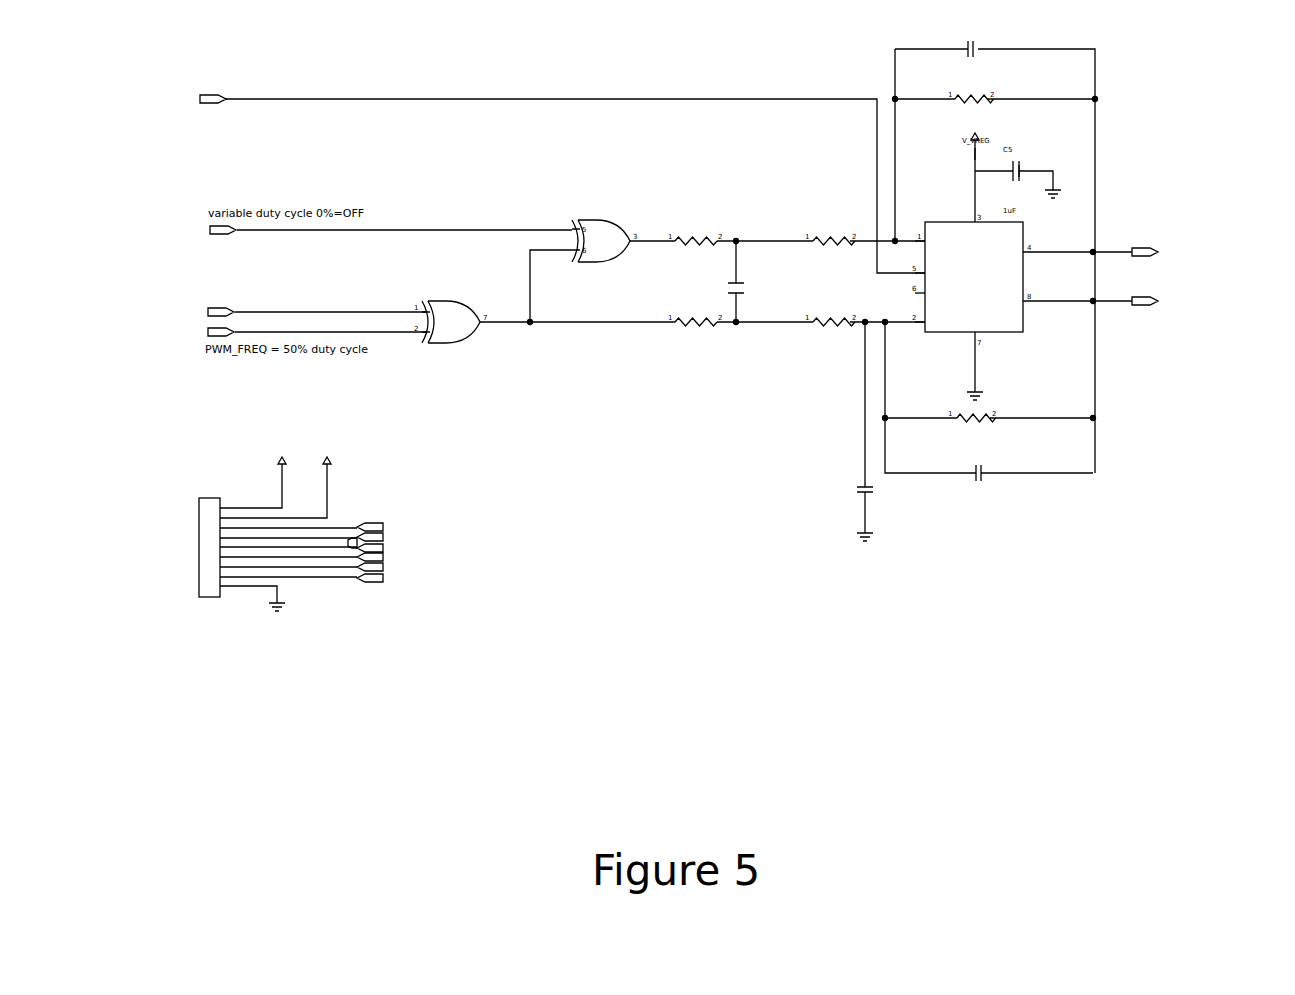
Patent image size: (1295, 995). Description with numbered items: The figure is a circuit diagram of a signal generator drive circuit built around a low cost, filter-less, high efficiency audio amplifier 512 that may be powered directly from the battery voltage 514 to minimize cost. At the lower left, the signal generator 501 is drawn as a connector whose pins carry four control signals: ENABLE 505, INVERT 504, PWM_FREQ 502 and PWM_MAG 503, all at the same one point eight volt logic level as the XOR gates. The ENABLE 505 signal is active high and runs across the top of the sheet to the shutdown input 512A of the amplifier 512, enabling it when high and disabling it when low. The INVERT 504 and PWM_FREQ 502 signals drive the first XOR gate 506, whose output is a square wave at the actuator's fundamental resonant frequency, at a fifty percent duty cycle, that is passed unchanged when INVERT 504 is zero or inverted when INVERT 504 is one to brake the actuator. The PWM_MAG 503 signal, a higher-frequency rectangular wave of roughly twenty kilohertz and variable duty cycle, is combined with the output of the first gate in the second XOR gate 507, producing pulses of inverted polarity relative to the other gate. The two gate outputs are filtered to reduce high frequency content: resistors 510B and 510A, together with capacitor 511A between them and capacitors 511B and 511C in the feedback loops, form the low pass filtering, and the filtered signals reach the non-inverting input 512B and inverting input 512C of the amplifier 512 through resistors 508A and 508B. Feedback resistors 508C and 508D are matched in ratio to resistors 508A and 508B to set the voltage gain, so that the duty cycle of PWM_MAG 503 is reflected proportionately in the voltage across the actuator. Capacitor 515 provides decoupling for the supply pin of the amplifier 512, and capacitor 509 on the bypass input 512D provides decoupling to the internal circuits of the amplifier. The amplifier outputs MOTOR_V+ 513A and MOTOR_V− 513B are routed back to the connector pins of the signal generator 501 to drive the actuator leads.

The signal generator 501 is at (190, 522).
The PWM_FREQ signal 502 is at (151, 335).
The PWM_MAG signal 503 is at (155, 222).
The INVERT signal 504 is at (163, 310).
The ENABLE signal 505 is at (167, 88).
The XOR gate 506 is at (451, 352).
The XOR gate 507 is at (600, 218).
The resistor 508A is at (816, 233).
The resistor 508B is at (816, 338).
The resistor 508C is at (985, 103).
The resistor 508D is at (988, 414).
The capacitor 509 is at (862, 486).
The resistor 510A is at (685, 332).
The resistor 510B is at (674, 228).
The capacitor 511A is at (726, 299).
The capacitor 511B is at (973, 44).
The capacitor 511C is at (980, 480).
The audio amplifier 512 is at (1023, 332).
The audio amplifier input 512A is at (917, 278).
The + input of the audio amplifier 512B is at (925, 332).
The − input of the audio amplifier 512C is at (923, 233).
The audio amplifier input 512D is at (914, 293).
The MOTOR_V+ output 513A is at (1203, 258).
The MOTOR_V− output 513B is at (1203, 296).
The battery voltage 514 is at (970, 149).
The capacitor 515 is at (1026, 166).